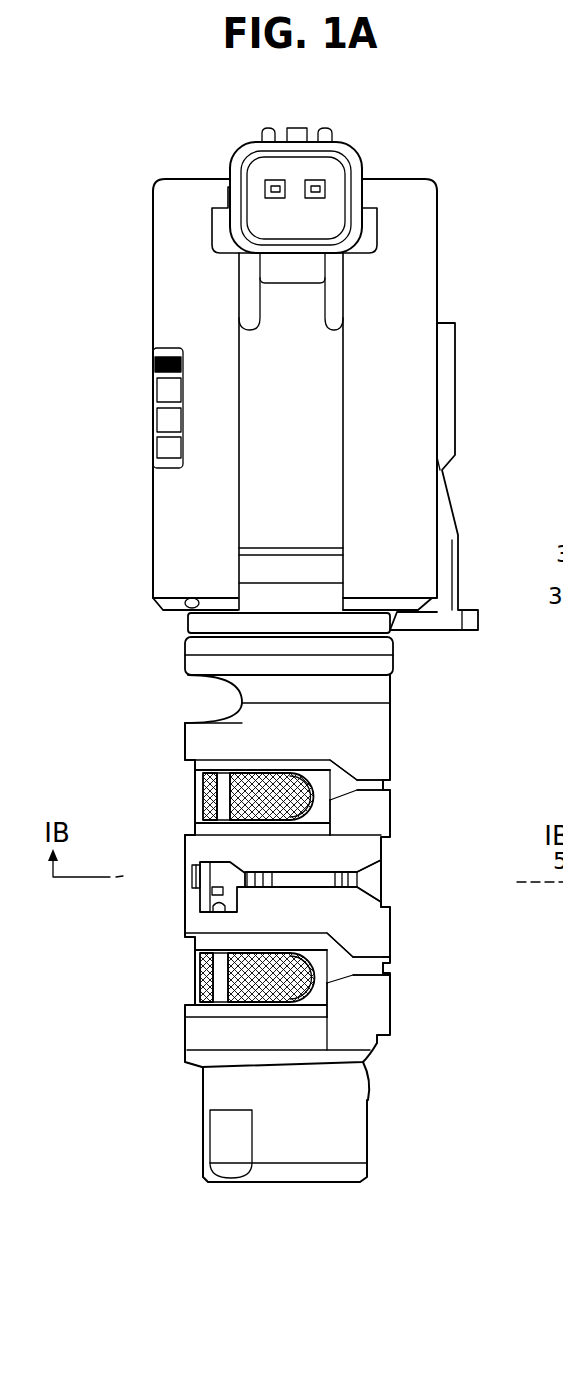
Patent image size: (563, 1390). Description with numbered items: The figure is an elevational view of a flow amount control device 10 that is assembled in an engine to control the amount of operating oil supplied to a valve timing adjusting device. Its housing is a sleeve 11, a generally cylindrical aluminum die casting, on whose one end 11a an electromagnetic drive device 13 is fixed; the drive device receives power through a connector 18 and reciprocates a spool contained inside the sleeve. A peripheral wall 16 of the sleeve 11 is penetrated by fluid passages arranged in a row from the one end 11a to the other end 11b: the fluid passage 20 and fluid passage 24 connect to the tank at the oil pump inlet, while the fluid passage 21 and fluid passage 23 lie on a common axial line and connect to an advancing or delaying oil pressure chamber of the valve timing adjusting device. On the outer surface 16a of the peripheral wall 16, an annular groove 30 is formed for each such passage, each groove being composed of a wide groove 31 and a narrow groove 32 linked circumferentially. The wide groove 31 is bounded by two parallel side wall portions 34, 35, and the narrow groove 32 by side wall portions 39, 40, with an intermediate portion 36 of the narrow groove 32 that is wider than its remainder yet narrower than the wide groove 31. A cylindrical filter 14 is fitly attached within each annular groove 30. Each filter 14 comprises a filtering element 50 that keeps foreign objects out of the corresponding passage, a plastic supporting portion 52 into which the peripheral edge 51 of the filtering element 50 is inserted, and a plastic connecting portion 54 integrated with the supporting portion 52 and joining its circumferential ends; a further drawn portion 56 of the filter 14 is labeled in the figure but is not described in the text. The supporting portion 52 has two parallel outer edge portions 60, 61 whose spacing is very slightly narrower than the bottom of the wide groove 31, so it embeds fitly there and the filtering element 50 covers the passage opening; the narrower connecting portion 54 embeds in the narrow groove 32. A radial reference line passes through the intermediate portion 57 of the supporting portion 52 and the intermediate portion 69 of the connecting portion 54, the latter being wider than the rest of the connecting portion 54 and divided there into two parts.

The flow amount control device 10 is at (440, 181).
The sleeve 11 is at (397, 723).
The one end of the sleeve 11a is at (207, 619).
The other end of the sleeve 11b is at (348, 1174).
The electromagnetic drive device 13 is at (418, 282).
The filter 14 is at (389, 787).
The peripheral wall 16 is at (190, 1040).
The outer surface of the peripheral wall 16a is at (310, 930).
The connector 18 is at (258, 177).
The fluid passage 20 is at (207, 685).
The fluid passage 21 is at (392, 815).
The fluid passage 23 is at (390, 948).
The fluid passage 24 is at (363, 1085).
The annular groove 30 is at (395, 742).
The wide groove 31 is at (190, 828).
The narrow groove 32 is at (392, 801).
The side wall portion 34 is at (277, 770).
The side wall portion 35 is at (276, 902).
The intermediate portion 36 is at (207, 920).
The side wall portion 39 is at (287, 882).
The side wall portion 40 is at (187, 875).
The filtering element 50 is at (193, 804).
The peripheral edge 51 is at (300, 775).
The supporting portion 52 is at (200, 762).
The connecting portion 54 is at (395, 766).
The filter end portion 56 is at (193, 783).
The intermediate portion 57 is at (227, 766).
The outer edge portion 60 is at (213, 757).
The outer edge portion 61 is at (203, 846).
The intermediate portion 69 is at (231, 863).